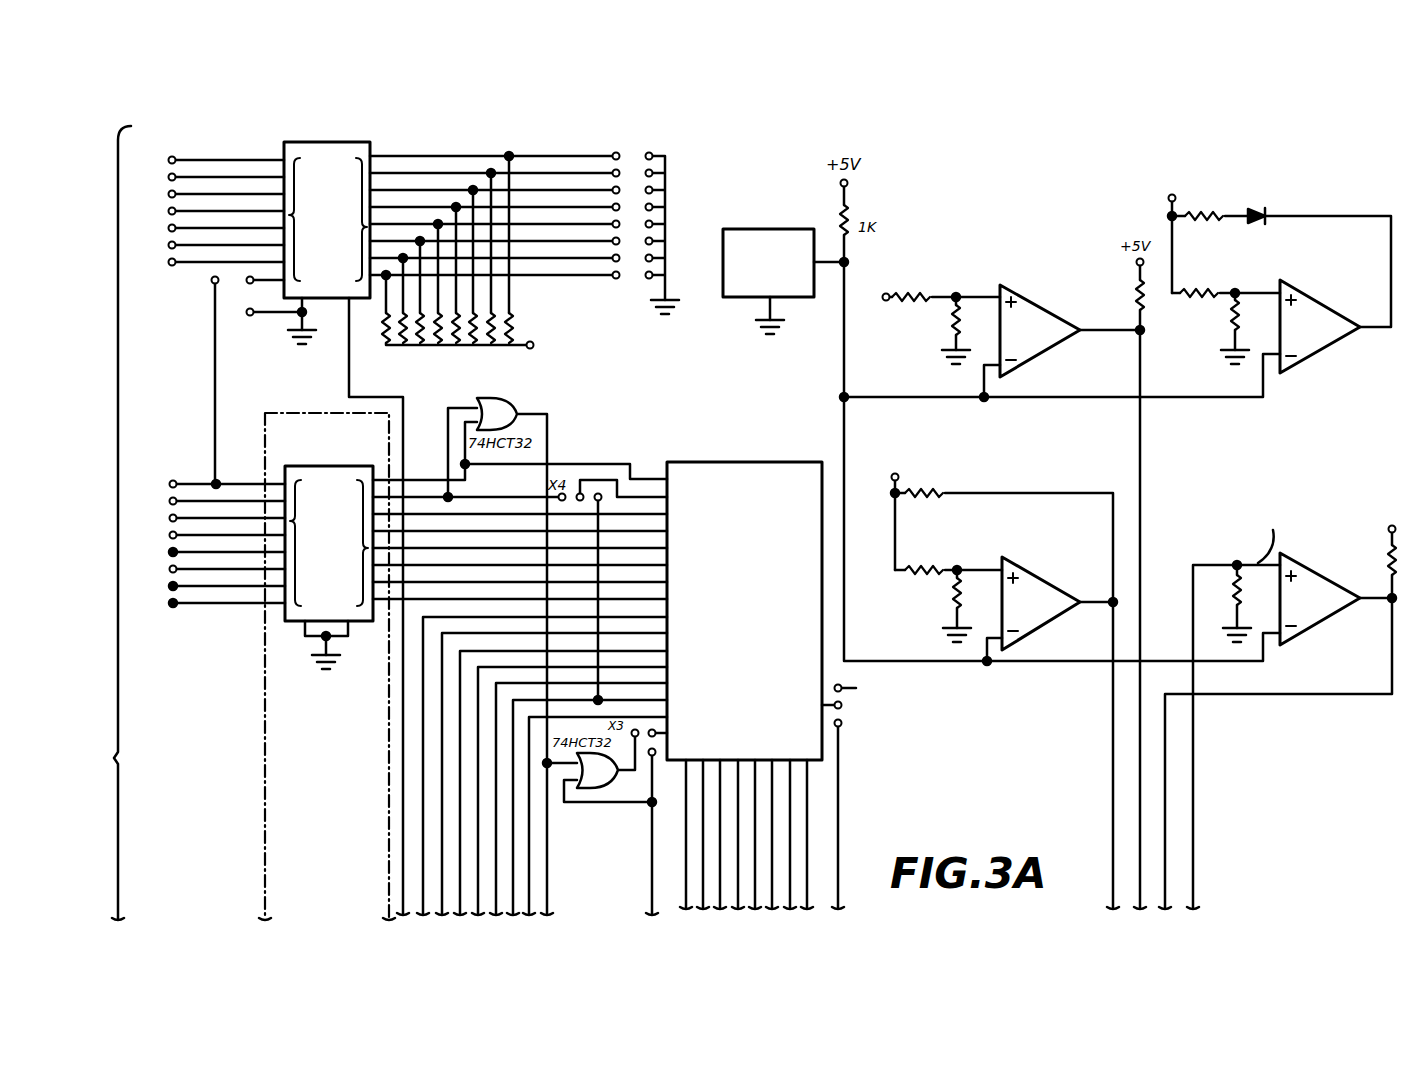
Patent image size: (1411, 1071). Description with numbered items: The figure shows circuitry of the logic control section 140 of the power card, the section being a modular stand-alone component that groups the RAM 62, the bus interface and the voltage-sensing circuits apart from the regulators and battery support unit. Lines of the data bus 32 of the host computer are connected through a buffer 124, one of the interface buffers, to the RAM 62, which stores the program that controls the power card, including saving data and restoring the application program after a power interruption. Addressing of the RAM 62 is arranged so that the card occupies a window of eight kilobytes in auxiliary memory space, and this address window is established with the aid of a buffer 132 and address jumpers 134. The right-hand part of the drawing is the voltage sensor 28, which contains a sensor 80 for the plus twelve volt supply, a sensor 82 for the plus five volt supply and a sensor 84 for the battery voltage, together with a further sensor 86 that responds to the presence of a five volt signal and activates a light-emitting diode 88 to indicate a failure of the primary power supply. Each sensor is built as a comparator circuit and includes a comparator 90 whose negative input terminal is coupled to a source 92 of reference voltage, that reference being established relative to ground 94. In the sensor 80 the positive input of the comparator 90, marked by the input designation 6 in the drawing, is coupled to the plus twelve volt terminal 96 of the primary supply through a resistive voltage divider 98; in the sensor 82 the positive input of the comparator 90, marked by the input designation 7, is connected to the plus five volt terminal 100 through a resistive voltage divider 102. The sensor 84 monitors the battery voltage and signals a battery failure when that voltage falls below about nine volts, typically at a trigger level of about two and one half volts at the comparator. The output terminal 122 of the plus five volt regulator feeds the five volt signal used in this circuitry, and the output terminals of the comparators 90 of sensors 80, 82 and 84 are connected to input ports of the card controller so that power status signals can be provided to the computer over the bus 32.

The data bus 32 is at (108, 523).
The logic control section 140 is at (176, 124).
The buffer 132 is at (283, 145).
The address jumpers 134 is at (612, 128).
The buffer 124 is at (285, 621).
The random-access memory (RAM) 62 is at (690, 462).
The source of reference voltage 92 is at (799, 297).
The ground 94 is at (758, 322).
The voltage sensor 28 is at (995, 272).
The +12-volt terminal 96 is at (886, 302).
The resistive voltage divider 98 is at (940, 342).
The sensor 80 is at (1060, 315).
The comparator inputs 6 is at (1016, 296).
The sensor 86 is at (1274, 236).
The output terminal 122 is at (1180, 197).
The light-emitting diode (LED) 88 is at (1262, 224).
The sensor 82 is at (995, 675).
The +5-volt terminal 100 is at (900, 477).
The resistive voltage divider 102 is at (950, 614).
The comparator inputs 7 is at (1005, 556).
The sensor 84 is at (1322, 510).
The comparator 90 is at (1308, 626).